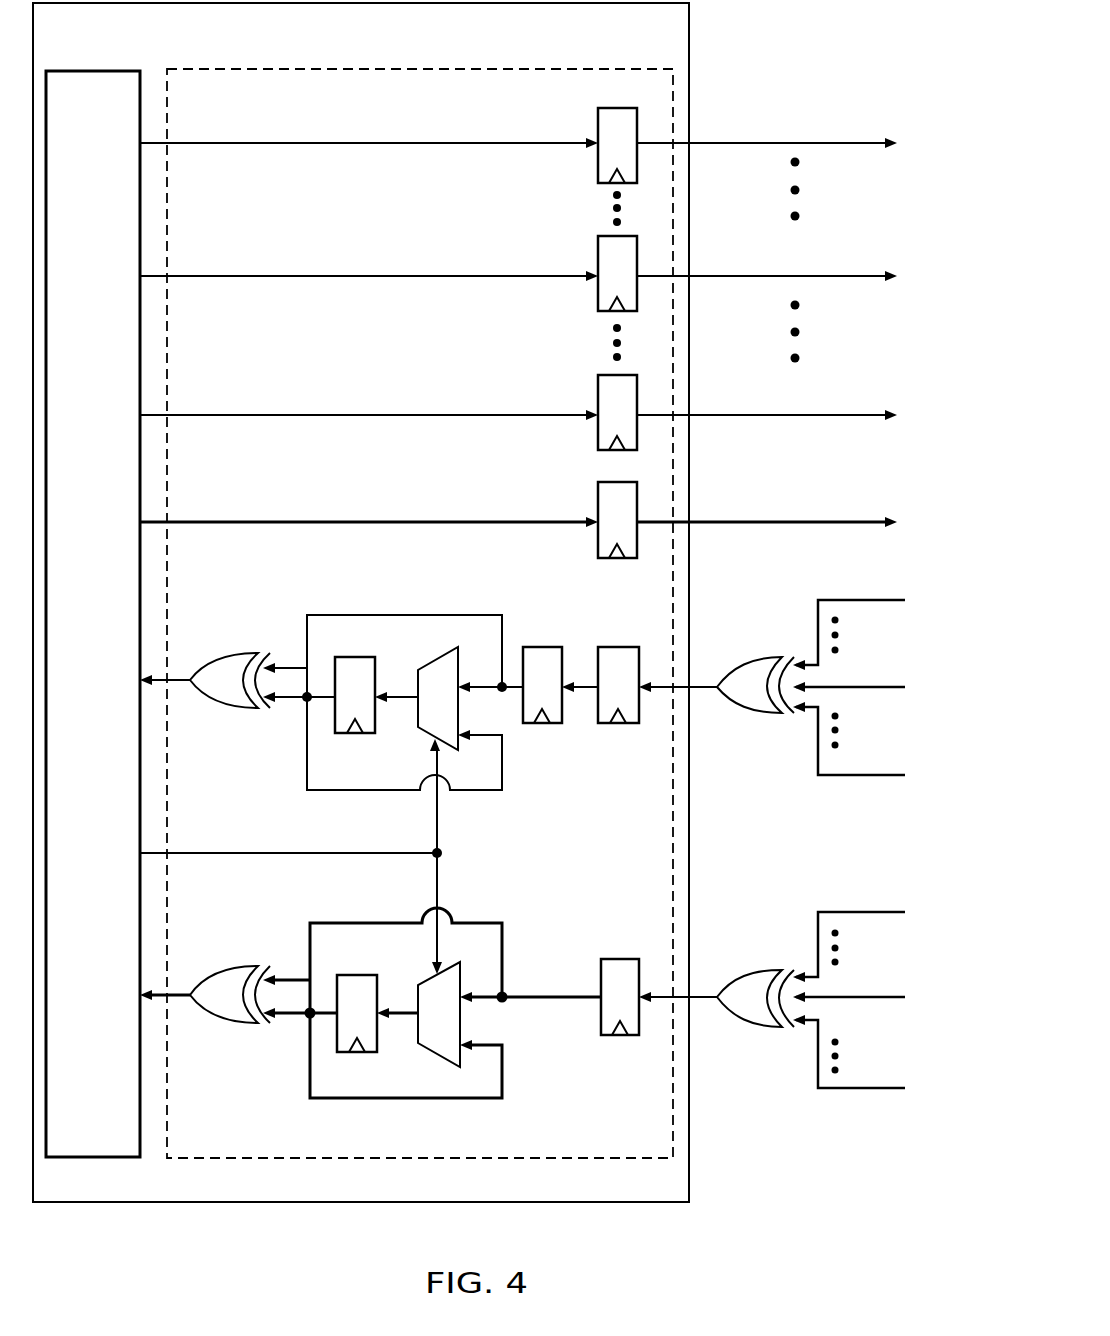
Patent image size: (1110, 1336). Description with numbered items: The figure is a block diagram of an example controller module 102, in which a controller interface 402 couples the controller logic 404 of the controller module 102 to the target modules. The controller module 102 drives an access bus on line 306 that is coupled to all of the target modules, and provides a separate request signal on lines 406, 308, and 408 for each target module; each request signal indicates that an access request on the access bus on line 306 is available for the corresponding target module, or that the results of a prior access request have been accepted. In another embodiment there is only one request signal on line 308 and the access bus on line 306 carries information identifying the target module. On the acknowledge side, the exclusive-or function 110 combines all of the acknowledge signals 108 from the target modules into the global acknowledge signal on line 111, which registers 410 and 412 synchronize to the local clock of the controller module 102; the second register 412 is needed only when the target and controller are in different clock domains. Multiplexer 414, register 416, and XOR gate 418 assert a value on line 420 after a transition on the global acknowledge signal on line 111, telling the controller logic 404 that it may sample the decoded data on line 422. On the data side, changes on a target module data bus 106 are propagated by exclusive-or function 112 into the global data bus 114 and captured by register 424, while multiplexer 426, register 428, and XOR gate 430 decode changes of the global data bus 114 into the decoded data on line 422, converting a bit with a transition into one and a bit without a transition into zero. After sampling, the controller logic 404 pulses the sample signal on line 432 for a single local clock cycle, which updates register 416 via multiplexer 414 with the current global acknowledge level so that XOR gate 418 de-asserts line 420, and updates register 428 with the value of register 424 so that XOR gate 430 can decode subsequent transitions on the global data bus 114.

The controller module 102 is at (689, 54).
The controller logic 404 is at (117, 71).
The controller interface 402 is at (525, 69).
The request signal line 406 is at (862, 145).
The request signal line 308 is at (862, 278).
The request signal line 408 is at (862, 417).
The access bus line 306 is at (862, 524).
The acknowledge signal lines 108 is at (875, 683).
The exclusive-or function 110 is at (762, 715).
The global acknowledge signal line 111 is at (706, 695).
The register 410 is at (619, 647).
The second register 412 is at (545, 647).
The multiplexer 414 is at (427, 738).
The register 416 is at (352, 657).
The XOR gate 418 is at (222, 712).
The asserted value line 420 is at (183, 668).
The sample signal line 432 is at (233, 853).
The data bus 106 is at (873, 1000).
The exclusive-or function 112 is at (762, 1030).
The global data bus line 114 is at (706, 1003).
The register 424 is at (618, 959).
The multiplexer 426 is at (447, 1062).
The register 428 is at (350, 975).
The XOR gate 430 is at (222, 1025).
The decoded data line 422 is at (183, 983).